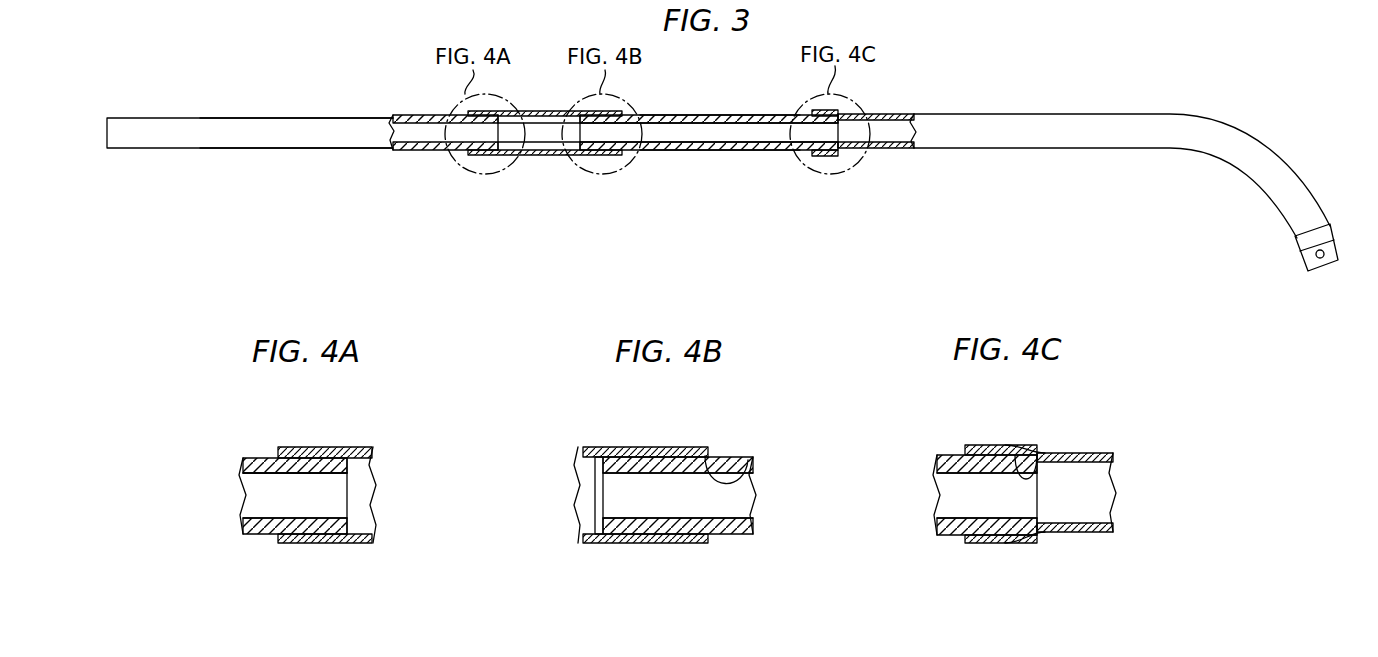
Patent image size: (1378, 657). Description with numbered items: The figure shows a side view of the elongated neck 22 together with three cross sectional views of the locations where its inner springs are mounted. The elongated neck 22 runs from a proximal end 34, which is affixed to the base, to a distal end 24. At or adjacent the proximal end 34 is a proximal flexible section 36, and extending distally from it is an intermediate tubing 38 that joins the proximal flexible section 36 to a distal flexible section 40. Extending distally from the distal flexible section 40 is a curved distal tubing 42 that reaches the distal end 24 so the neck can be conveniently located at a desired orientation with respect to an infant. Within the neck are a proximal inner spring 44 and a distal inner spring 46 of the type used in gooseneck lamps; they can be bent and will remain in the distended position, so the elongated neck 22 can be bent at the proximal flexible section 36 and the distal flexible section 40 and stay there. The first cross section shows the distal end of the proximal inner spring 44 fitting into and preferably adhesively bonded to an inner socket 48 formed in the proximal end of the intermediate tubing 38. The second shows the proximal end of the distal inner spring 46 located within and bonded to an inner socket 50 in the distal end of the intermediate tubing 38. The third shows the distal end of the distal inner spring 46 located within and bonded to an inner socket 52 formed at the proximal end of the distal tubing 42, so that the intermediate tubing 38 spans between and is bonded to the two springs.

In FIG. 3, the elongated neck 22 is at (885, 90).
In FIG. 3, the distal end 24 is at (1302, 265).
In FIG. 3, the proximal end 34 is at (115, 118).
In FIG. 3, the proximal flexible section 36 is at (350, 118).
In FIG. 3, the intermediate tubing 38 is at (540, 111).
In FIG. 4A, the intermediate tubing 38 is at (325, 447).
In FIG. 4B, the intermediate tubing 38 is at (650, 447).
In FIG. 4C, the intermediate tubing 38 is at (985, 445).
In FIG. 3, the distal flexible section 40 is at (734, 115).
In FIG. 3, the curved distal tubing 42 is at (987, 149).
In FIG. 4C, the curved distal tubing 42 is at (1088, 455).
In FIG. 3, the proximal inner spring 44 is at (405, 151).
In FIG. 4A, the proximal inner spring 44 is at (268, 532).
In FIG. 3, the distal inner spring 46 is at (773, 151).
In FIG. 4B, the distal inner spring 46 is at (745, 535).
In FIG. 4C, the distal inner spring 46 is at (940, 536).
In FIG. 4A, the inner socket 48 is at (310, 473).
In FIG. 4B, the inner socket 50 is at (740, 456).
In FIG. 3, the inner socket 52 is at (825, 133).
In FIG. 4C, the inner socket 52 is at (1033, 455).